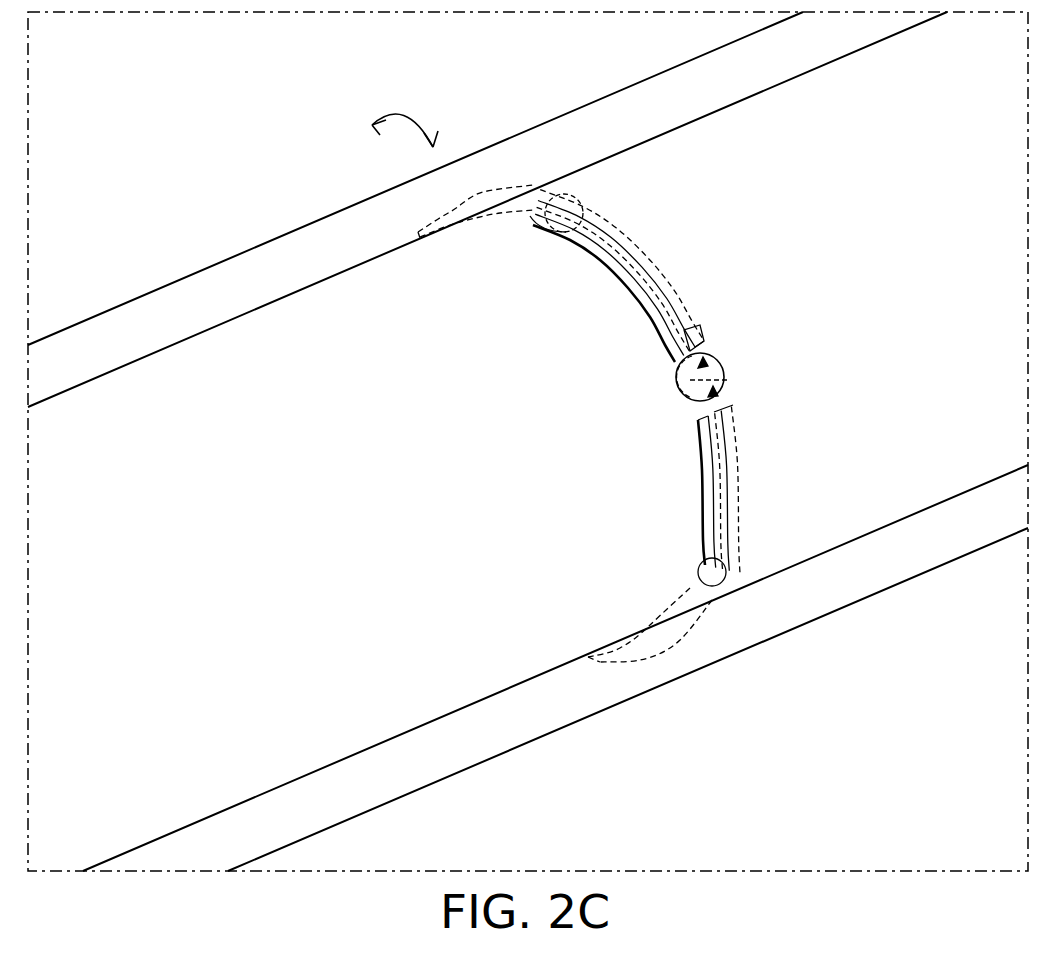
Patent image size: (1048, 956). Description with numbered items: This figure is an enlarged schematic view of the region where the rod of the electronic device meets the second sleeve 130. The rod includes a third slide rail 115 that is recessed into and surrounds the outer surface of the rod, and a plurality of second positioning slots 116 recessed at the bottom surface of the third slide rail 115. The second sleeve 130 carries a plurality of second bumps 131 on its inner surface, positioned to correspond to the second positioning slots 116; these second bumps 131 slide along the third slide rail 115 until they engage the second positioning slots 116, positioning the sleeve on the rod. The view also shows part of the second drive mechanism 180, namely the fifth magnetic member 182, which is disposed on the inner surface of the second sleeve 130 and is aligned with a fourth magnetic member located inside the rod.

The third slide rail 115 is at (670, 333).
The second positioning slots 116 is at (678, 392).
The second sleeve 130 is at (945, 558).
The second bumps 131 is at (703, 325).
The second drive mechanism 180 is at (876, 762).
The fifth magnetic member 182 is at (727, 380).